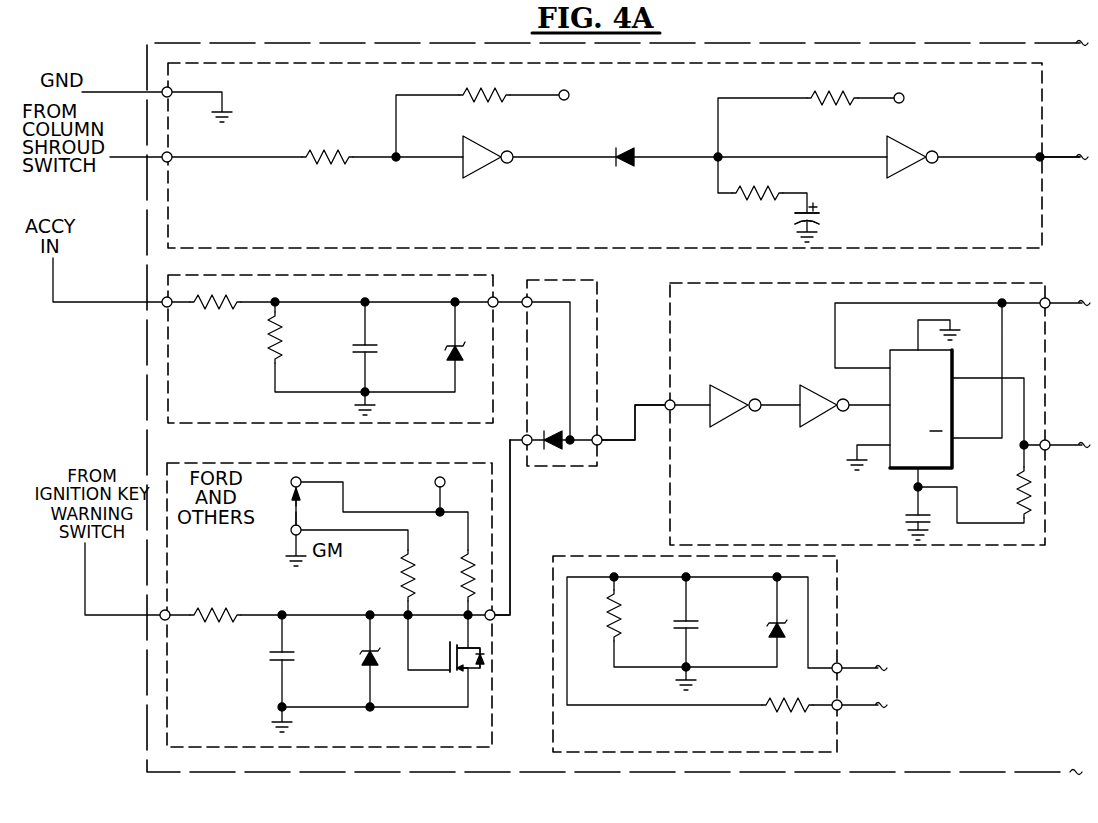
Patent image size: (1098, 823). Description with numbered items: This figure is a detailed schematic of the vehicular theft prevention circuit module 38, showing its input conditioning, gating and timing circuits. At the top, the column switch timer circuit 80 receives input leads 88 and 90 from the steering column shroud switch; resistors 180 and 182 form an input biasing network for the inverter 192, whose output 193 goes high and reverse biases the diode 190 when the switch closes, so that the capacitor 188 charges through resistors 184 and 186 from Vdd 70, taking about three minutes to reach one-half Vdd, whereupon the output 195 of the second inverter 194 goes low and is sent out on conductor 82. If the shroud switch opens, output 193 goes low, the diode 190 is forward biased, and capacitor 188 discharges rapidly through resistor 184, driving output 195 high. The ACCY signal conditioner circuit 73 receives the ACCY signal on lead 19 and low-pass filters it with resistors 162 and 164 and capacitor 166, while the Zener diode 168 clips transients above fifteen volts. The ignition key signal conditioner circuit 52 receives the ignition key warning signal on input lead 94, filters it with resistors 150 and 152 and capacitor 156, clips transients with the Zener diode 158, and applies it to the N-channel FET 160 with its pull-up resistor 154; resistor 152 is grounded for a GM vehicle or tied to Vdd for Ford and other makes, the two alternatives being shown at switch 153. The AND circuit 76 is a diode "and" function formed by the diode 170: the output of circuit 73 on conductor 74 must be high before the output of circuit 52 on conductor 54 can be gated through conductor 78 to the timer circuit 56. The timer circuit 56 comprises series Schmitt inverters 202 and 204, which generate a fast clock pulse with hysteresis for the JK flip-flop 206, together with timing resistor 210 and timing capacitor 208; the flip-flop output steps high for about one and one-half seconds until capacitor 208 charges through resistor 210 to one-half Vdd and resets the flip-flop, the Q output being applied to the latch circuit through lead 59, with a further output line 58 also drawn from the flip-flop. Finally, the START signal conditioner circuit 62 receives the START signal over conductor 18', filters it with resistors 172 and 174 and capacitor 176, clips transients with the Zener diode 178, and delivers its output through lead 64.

The vehicular theft prevention circuit module 38 is at (945, 772).
The column switch timer circuit 80 is at (1042, 212).
The input lead 90 is at (133, 87).
The input lead 88 is at (133, 160).
The resistor 180 is at (322, 163).
The resistor 182 is at (465, 92).
The Vdd 70 is at (568, 90).
The integrated circuit inverter 192 is at (483, 150).
The output of inverter 192 193 is at (514, 153).
The diode 190 is at (628, 150).
The resistor 186 is at (812, 102).
The resistor 184 is at (737, 202).
The capacitor 188 is at (800, 212).
The second inverter 194 is at (907, 147).
The output of inverter 194 195 is at (942, 167).
The conductor 82 is at (1058, 157).
The ACCY signal conditioner circuit 73 is at (167, 385).
The lead 19 is at (110, 304).
The resistor 162 is at (213, 306).
The resistor 164 is at (270, 345).
The capacitor 166 is at (347, 332).
The Zener diode 168 is at (448, 356).
The conductor 74 is at (510, 303).
The AND circuit 76 is at (582, 468).
The diode 170 is at (553, 450).
The conductor 78 is at (620, 445).
The timer circuit 56 is at (950, 284).
The Schmitt inverter 202 is at (738, 395).
The Schmitt inverter 204 is at (823, 394).
The JK flip-flop 206 is at (907, 348).
The lead 59 is at (1063, 308).
The output line 58 is at (1063, 450).
The timing resistor 210 is at (1020, 480).
The timing capacitor 208 is at (908, 522).
The ignition key signal conditioner circuit 52 is at (165, 705).
The input lead 94 is at (110, 615).
The resistor 150 is at (205, 612).
The selector switch 153 is at (295, 507).
The resistor 152 is at (402, 573).
The pull-up resistor 154 is at (461, 572).
The capacitor 156 is at (270, 650).
The Zener diode 158 is at (362, 657).
The N-channel FET 160 is at (460, 678).
The conductor 54 is at (510, 565).
The START signal conditioner circuit 62 is at (838, 567).
The resistor 174 is at (607, 632).
The capacitor 176 is at (732, 608).
The Zener diode 178 is at (770, 630).
The resistor 172 is at (790, 703).
The lead 64 is at (858, 667).
The conductor 18' is at (869, 727).